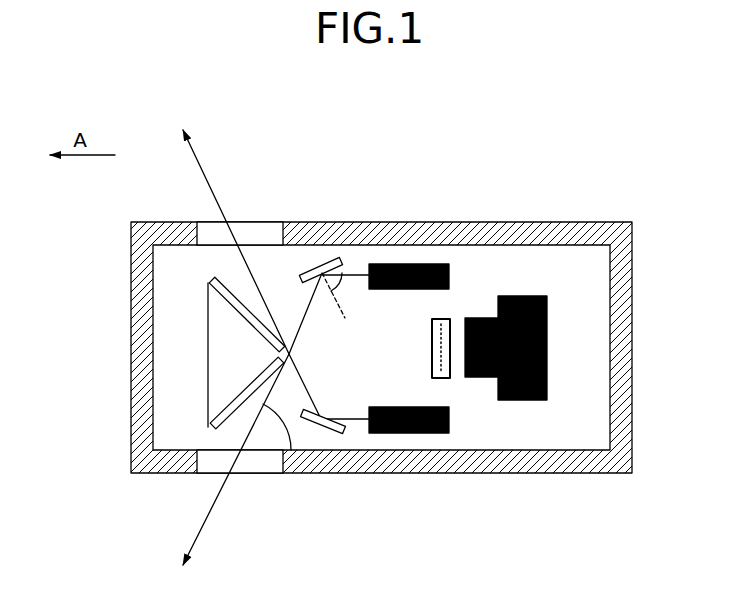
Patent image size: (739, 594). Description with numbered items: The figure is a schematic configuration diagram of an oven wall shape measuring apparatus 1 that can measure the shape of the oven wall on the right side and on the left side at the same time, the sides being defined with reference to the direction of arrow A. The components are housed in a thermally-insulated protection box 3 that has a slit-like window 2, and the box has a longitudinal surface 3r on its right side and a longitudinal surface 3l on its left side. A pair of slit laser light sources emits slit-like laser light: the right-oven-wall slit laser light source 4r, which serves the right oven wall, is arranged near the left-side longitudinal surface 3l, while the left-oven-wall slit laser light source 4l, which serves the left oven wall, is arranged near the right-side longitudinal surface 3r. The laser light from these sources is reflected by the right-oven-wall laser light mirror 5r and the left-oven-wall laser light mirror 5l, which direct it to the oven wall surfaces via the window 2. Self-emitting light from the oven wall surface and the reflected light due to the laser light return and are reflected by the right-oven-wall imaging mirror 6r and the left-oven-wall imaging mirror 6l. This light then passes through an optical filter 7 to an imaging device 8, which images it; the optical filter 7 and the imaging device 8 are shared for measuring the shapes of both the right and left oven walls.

The oven wall shape measuring apparatus 1 is at (654, 182).
The slit-like window 2 is at (253, 474).
The thermally-insulated protection box 3 is at (411, 347).
The longitudinal surface on the right side 3r is at (463, 222).
The longitudinal surface on the left side 3l is at (462, 474).
The left-oven-wall slit laser light source 4l is at (406, 264).
The right-oven-wall slit laser light source 4r is at (408, 434).
The left-oven-wall laser light mirror 5l is at (318, 265).
The right-oven-wall laser light mirror 5r is at (323, 435).
The right-oven-wall imaging mirror 6r is at (245, 327).
The left-oven-wall imaging mirror 6l is at (243, 378).
The optical filter 7 is at (441, 380).
The imaging device 8 is at (520, 296).